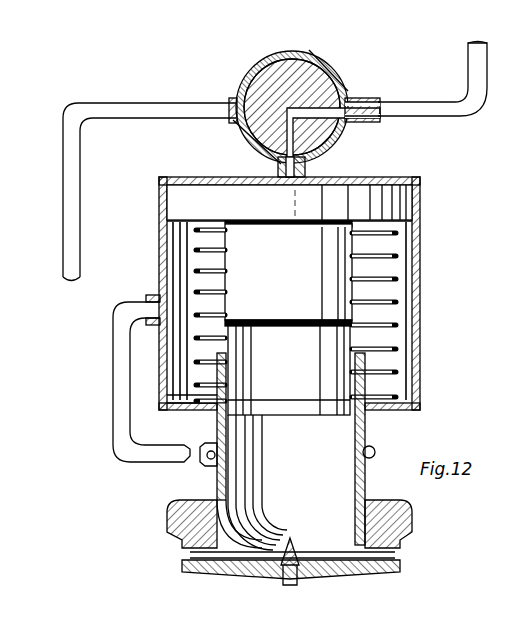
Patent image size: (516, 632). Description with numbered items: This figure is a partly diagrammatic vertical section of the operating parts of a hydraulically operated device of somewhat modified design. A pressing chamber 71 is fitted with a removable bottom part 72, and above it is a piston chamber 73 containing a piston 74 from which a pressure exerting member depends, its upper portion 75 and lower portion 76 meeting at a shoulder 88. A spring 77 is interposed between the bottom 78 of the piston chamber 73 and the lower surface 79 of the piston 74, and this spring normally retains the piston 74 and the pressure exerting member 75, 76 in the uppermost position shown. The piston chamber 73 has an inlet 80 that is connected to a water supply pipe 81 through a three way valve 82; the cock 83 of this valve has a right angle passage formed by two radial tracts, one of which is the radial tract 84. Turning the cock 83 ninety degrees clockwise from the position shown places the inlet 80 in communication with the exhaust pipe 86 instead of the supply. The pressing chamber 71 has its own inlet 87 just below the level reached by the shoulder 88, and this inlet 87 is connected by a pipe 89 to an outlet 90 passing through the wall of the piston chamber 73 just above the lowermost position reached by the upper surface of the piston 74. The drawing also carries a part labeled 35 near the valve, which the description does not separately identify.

The socket plate 35 is at (250, 147).
The pressing chamber 71 is at (352, 480).
The removable bottom part 72 is at (398, 550).
The piston chamber 73 is at (400, 262).
The piston 74 is at (398, 194).
The upper portion of pressure exerting member 75 is at (235, 256).
The lower portion of pressure exerting member 76 is at (214, 410).
The spring 77 is at (392, 305).
The bottom of piston chamber 78 is at (395, 410).
The lower surface of the piston 79 is at (398, 222).
The inlet 80 is at (306, 170).
The water supply pipe 81 is at (437, 118).
The three way valve 82 is at (310, 64).
The cock 83 is at (270, 64).
The radial tract 84 is at (333, 98).
The exhaust pipe 86 is at (72, 218).
The inlet 87 is at (222, 460).
The shoulder 88 is at (355, 338).
The pipe 89 is at (122, 392).
The outlet 90 is at (152, 306).